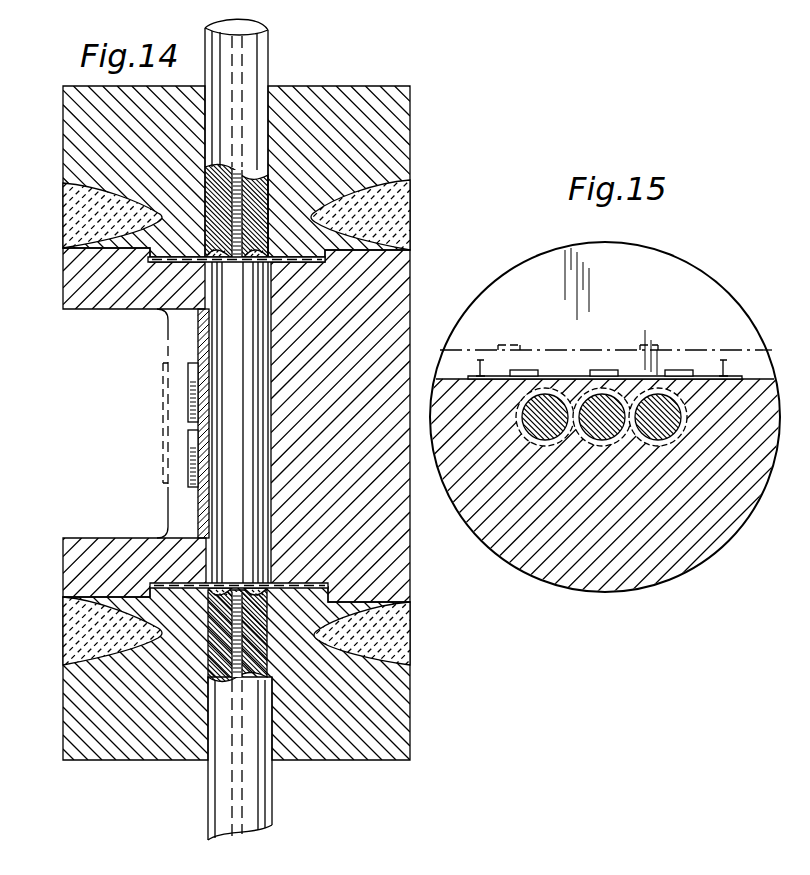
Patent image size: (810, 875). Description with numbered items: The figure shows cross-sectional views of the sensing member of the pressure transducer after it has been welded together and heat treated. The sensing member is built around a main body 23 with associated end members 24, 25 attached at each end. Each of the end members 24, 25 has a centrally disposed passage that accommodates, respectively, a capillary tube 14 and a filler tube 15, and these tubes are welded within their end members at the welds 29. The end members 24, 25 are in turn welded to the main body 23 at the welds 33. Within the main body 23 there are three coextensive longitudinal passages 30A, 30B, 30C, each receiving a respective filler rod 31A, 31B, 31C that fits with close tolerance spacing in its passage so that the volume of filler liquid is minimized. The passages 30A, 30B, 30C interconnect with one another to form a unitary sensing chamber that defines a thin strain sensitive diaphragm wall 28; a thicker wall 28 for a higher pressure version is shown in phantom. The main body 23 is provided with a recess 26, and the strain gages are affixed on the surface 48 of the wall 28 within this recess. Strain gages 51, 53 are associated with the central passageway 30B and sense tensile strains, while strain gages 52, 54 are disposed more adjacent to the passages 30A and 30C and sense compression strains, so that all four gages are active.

In FIG. 14, the capillary tube 14 is at (274, 804).
In FIG. 14, the filler tube 15 is at (271, 58).
In FIG. 14, the main body 23 is at (412, 268).
In FIG. 15, the main body 23 is at (762, 506).
In FIG. 14, the end member 24 is at (168, 764).
In FIG. 14, the end member 25 is at (412, 118).
In FIG. 14, the recess 26 is at (110, 392).
In FIG. 14, the strain sensitive diaphragm wall 28 is at (163, 413).
In FIG. 15, the strain sensitive diaphragm wall 28 is at (552, 350).
In FIG. 14, the weld 29 is at (273, 250).
In FIG. 15, the passage 30A is at (530, 442).
In FIG. 14, the passage 30B is at (272, 530).
In FIG. 15, the passage 30B is at (613, 443).
In FIG. 15, the passage 30C is at (663, 445).
In FIG. 15, the filler rod 31A is at (547, 438).
In FIG. 14, the filler rod 31B is at (217, 323).
In FIG. 15, the filler rod 31B is at (618, 430).
In FIG. 15, the filler rod 31C is at (675, 432).
In FIG. 14, the weld 33 is at (62, 192).
In FIG. 14, the surface 48 is at (197, 352).
In FIG. 15, the surface 48 is at (746, 377).
In FIG. 14, the strain gage 51 is at (186, 380).
In FIG. 15, the strain gage 52 is at (510, 372).
In FIG. 14, the strain gage 53 is at (186, 455).
In FIG. 15, the strain gage 53 is at (614, 371).
In FIG. 15, the strain gage 54 is at (694, 371).